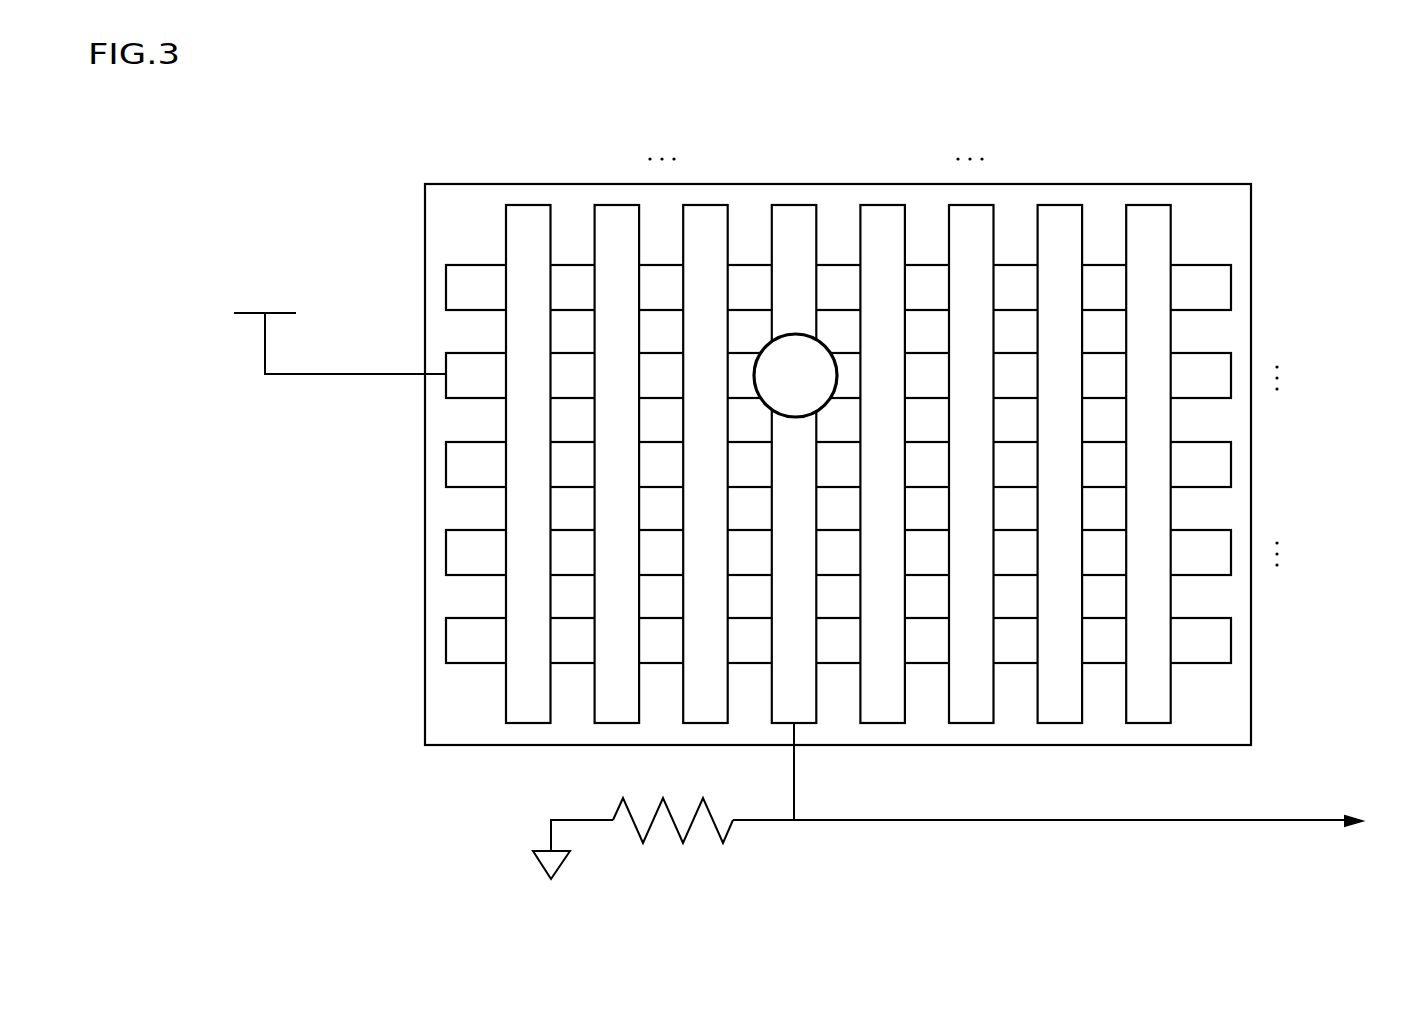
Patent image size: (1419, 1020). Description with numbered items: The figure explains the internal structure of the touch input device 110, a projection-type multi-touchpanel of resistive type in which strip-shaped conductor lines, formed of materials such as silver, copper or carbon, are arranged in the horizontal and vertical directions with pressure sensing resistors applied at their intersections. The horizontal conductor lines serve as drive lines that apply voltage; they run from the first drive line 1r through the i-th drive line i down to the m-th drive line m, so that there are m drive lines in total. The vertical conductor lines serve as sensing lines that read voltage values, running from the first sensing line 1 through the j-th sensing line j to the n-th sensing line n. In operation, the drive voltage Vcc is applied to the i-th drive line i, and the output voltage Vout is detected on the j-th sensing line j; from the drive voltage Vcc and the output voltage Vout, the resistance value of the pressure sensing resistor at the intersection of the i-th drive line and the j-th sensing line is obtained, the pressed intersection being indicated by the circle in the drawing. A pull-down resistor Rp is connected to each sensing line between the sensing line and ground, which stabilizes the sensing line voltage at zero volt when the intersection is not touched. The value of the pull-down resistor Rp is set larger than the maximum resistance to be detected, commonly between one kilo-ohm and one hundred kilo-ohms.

The touch input device 110 is at (1209, 184).
The first sensing line 1 is at (528, 435).
The j-th sensing line j is at (794, 435).
The n-th sensing line n is at (1148, 435).
The first drive line 1r is at (867, 287).
The i-th drive line i is at (867, 464).
The m-th drive line m is at (867, 640).
The drive voltage Vcc is at (340, 328).
The output voltage Vout is at (1076, 780).
The pull-down resistor Rp is at (633, 838).